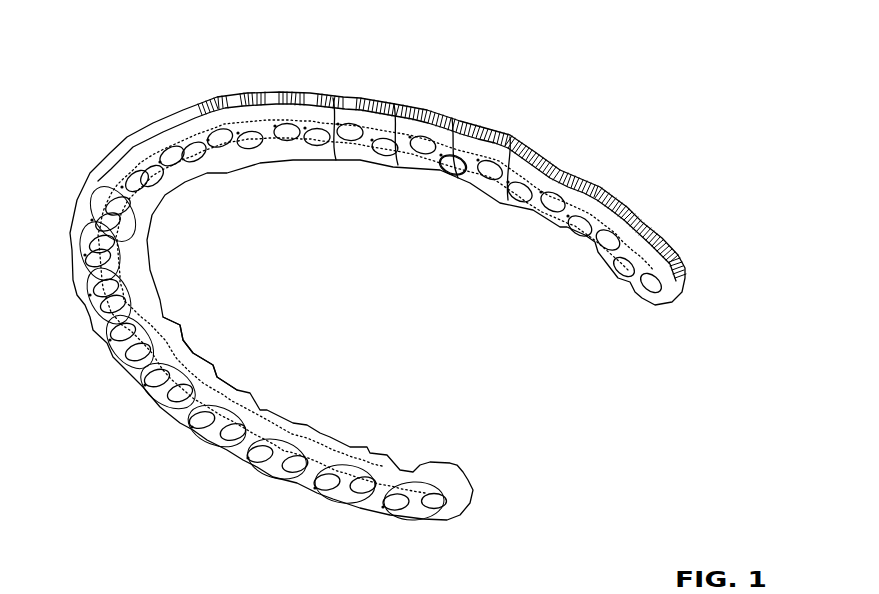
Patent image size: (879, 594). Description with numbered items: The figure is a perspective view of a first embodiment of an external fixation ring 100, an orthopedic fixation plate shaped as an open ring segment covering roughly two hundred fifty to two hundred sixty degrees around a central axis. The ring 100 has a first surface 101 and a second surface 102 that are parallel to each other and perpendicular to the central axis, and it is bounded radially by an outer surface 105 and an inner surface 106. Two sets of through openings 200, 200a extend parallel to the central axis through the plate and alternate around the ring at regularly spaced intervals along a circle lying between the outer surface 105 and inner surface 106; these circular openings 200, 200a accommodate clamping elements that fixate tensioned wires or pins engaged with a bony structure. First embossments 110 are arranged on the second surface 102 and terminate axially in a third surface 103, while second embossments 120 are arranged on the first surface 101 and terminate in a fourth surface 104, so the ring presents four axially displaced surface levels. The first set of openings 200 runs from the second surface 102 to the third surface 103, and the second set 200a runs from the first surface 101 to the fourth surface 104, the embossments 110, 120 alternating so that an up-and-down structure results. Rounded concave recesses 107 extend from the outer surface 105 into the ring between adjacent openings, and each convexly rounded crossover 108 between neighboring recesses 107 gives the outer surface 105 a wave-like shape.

The fixation ring 100 is at (675, 297).
The first surface 101 is at (600, 172).
The second surface 102 is at (462, 178).
The third surface 103 is at (570, 237).
The fourth surface 104 is at (507, 120).
The outer surface 105 is at (333, 96).
The inner surface 106 is at (202, 373).
The recess 107 is at (452, 118).
The crossover 108 is at (394, 102).
The first embossment 110 is at (453, 164).
The second embossment 120 is at (509, 132).
The first set of through openings 200 is at (625, 264).
The second set of through openings 200a is at (657, 279).